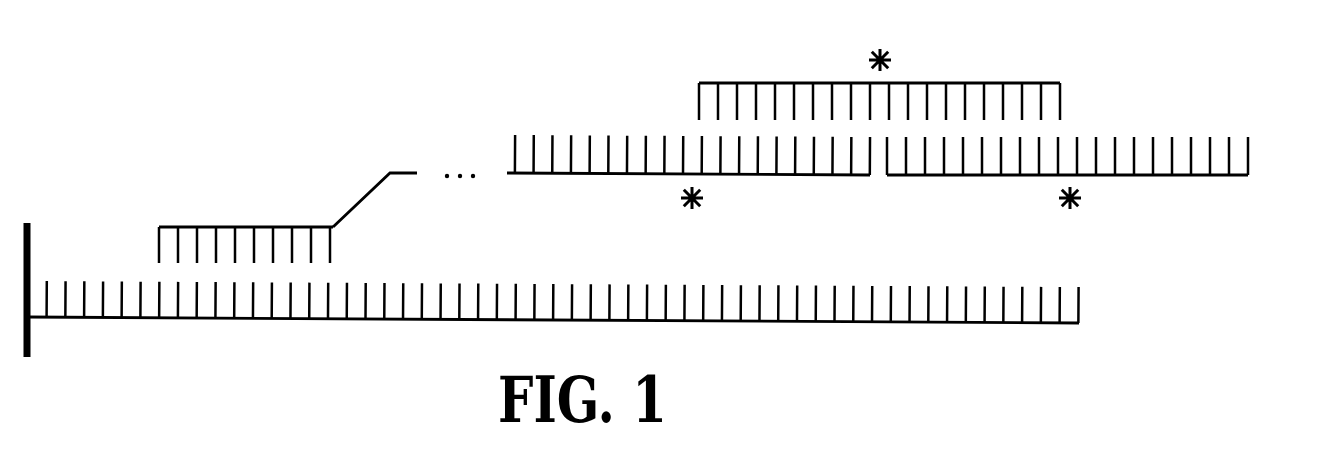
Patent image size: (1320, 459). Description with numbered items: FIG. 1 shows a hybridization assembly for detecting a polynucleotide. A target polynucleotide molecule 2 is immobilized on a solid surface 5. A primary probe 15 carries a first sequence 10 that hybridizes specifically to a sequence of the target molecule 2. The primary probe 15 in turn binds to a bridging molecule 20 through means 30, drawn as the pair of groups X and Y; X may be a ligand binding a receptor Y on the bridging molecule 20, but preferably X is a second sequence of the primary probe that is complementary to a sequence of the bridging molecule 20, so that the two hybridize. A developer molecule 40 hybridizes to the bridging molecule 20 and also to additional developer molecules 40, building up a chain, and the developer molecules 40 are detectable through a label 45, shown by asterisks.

The target polynucleotide molecule 2 is at (1067, 325).
The solid surface 5 is at (31, 247).
The first sequence of primary probe 10 is at (220, 225).
The primary probe 15 is at (365, 195).
The bridging molecule 20 is at (583, 135).
The means for binding primary probe to bridging molecule 30 is at (463, 187).
The developer molecule 40 is at (1048, 83).
The label 45 is at (897, 53).